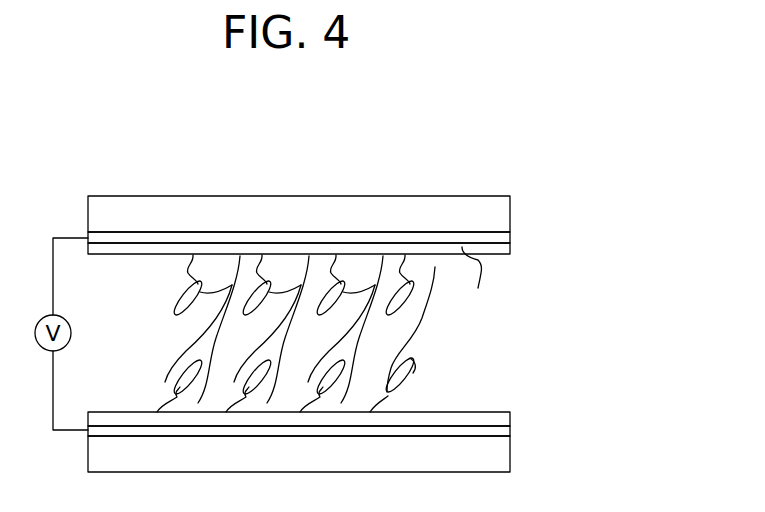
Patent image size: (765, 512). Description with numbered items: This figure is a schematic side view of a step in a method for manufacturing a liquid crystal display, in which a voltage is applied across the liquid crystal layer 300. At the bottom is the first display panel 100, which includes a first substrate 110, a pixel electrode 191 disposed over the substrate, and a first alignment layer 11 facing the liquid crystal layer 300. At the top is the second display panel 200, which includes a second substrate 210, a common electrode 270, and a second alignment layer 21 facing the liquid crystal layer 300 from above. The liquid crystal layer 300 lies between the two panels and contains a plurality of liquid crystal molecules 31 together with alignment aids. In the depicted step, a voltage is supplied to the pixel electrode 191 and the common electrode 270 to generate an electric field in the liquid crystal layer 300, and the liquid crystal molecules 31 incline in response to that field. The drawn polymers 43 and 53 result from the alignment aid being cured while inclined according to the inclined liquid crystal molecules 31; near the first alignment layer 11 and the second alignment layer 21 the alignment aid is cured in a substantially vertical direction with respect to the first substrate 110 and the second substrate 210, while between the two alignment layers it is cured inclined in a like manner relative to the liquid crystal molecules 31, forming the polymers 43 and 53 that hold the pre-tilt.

The liquid crystal molecules 31 is at (178, 292).
The polymer 43 is at (430, 297).
The polymer 53 is at (462, 247).
The second substrate 210 is at (498, 212).
The common electrode 270 is at (498, 237).
The second alignment layer 21 is at (328, 261).
The second display panel 200 is at (354, 237).
The liquid crystal layer 300 is at (510, 256).
The first alignment layer 11 is at (500, 420).
The pixel electrode 191 is at (498, 432).
The first substrate 110 is at (498, 458).
The first display panel 100 is at (354, 434).